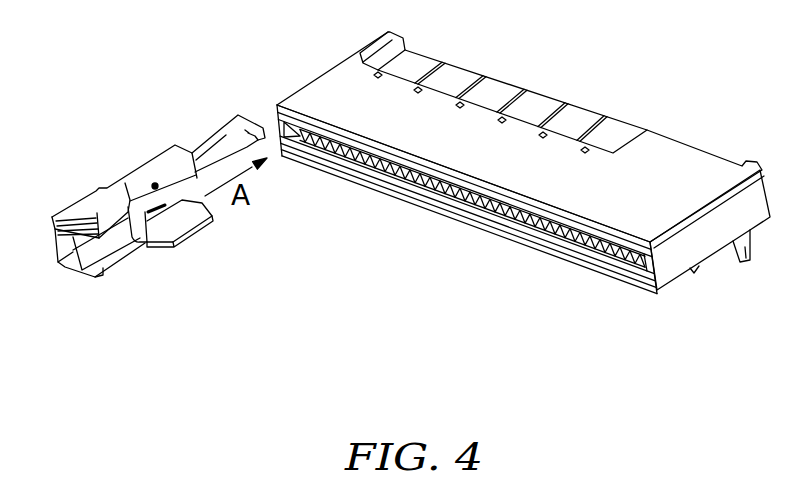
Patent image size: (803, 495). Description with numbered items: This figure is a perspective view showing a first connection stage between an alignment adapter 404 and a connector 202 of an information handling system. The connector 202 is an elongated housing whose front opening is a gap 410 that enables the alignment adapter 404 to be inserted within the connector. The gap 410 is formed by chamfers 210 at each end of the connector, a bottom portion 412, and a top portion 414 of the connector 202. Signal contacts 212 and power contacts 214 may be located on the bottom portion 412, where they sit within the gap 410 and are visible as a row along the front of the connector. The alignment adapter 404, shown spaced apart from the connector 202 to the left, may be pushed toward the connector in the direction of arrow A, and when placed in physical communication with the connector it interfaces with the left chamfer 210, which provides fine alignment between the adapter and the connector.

The connector 202 is at (501, 192).
The chamfers 210 is at (277, 124).
The signal contacts 212 is at (575, 232).
The power contacts 214 is at (390, 162).
The alignment adapter 404 is at (103, 168).
The gap 410 is at (336, 150).
The bottom portion 412 is at (462, 215).
The top portion 414 is at (323, 88).